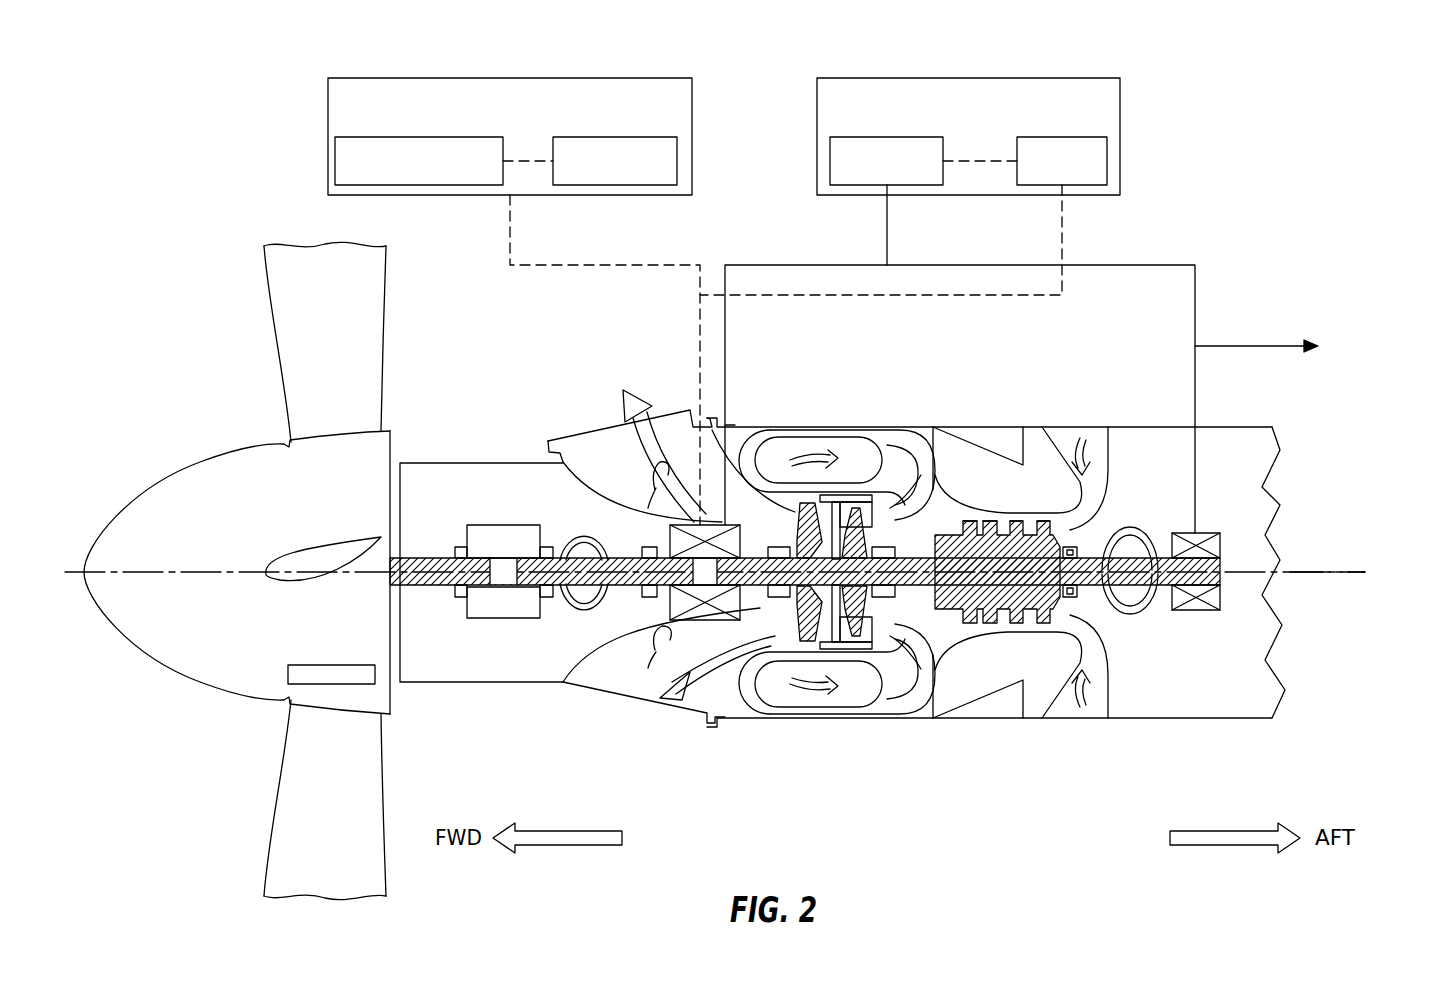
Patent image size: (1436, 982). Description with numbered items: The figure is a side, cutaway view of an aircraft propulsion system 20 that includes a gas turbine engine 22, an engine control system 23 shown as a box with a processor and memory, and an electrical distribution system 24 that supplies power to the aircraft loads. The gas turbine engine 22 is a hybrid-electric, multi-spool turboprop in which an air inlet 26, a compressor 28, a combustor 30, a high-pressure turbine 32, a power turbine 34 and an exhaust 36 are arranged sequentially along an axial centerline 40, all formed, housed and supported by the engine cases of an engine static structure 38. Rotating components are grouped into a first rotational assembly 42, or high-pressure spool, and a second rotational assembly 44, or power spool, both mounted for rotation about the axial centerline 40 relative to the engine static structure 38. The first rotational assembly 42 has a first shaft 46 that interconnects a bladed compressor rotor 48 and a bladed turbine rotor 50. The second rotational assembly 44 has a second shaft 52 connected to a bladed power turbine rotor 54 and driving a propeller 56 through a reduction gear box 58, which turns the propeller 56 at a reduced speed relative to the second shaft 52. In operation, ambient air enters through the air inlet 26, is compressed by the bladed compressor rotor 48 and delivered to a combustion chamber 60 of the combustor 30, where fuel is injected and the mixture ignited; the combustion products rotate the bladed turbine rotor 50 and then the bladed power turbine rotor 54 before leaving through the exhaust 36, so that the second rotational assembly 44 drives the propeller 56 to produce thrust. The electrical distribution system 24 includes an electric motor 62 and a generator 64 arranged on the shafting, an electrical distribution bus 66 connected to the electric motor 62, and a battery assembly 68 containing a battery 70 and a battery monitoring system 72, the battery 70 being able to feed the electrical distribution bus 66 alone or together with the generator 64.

The propulsion system 20 is at (1298, 231).
The gas turbine engine 22 is at (920, 370).
The engine control system 23 is at (658, 78).
The electrical distribution system 24 is at (1204, 208).
The air inlet 26 is at (1103, 405).
The compressor 28 is at (987, 645).
The combustor 30 is at (846, 422).
The high-pressure turbine 32 is at (912, 522).
The power turbine 34 is at (772, 614).
The exhaust 36 is at (572, 421).
The engine static structure 38 is at (1133, 427).
The axial centerline 40 is at (1345, 575).
The first rotational assembly 42 is at (918, 617).
The second rotational assembly 44 is at (558, 622).
The first shaft 46 is at (940, 547).
The bladed compressor rotor 48 is at (1017, 521).
The bladed turbine rotor 50 is at (890, 632).
The second shaft 52 is at (795, 512).
The bladed power turbine rotor 54 is at (812, 503).
The propeller 56 is at (190, 667).
The reduction gear box 58 is at (508, 527).
The combustion chamber 60 is at (848, 677).
The electric motor 62 is at (670, 612).
The generator 64 is at (1195, 612).
The electrical distribution bus 66 is at (755, 265).
The battery assembly 68 is at (944, 149).
The battery 70 is at (830, 146).
The battery monitoring system 72 is at (1107, 153).